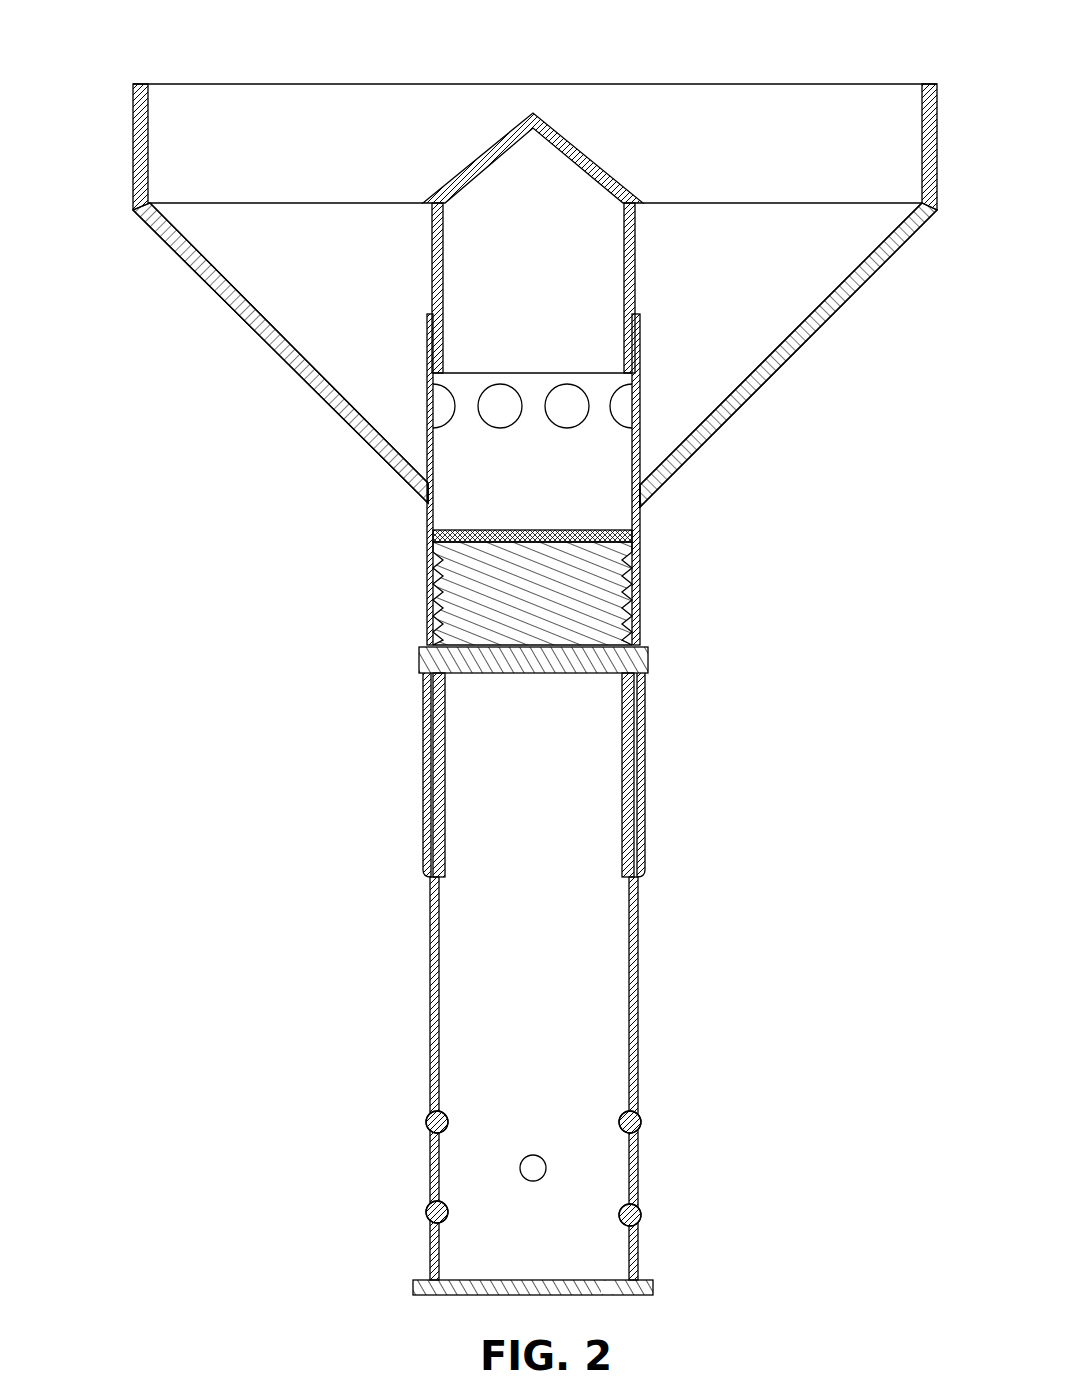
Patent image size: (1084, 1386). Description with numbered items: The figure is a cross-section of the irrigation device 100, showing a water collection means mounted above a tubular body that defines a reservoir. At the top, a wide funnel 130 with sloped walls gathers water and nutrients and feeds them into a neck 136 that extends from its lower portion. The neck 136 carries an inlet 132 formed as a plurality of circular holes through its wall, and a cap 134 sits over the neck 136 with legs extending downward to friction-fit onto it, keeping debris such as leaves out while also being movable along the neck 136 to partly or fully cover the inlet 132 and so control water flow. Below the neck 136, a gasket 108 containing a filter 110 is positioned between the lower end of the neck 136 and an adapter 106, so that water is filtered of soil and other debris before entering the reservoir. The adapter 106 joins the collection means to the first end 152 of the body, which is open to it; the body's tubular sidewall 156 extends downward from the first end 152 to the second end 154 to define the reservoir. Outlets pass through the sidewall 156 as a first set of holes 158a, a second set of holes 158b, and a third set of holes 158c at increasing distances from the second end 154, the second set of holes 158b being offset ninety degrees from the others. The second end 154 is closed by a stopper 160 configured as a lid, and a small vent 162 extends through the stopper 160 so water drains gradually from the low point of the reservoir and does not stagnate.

The irrigation device 100 is at (150, 373).
The adapter 106 is at (642, 656).
The gasket 108 is at (447, 533).
The filter 110 is at (500, 536).
The funnel 130 is at (770, 167).
The inlet 132 is at (625, 402).
The cap 134 is at (548, 128).
The neck 136 is at (642, 438).
The first end 152 is at (465, 690).
The second end 154 is at (558, 1107).
The tubular sidewall 156 is at (633, 932).
The first set of holes 158a is at (650, 1120).
The second set of holes 158b is at (528, 1158).
The third set of holes 158c is at (654, 1213).
The stopper 160 is at (423, 1284).
The vent 162 is at (606, 1308).